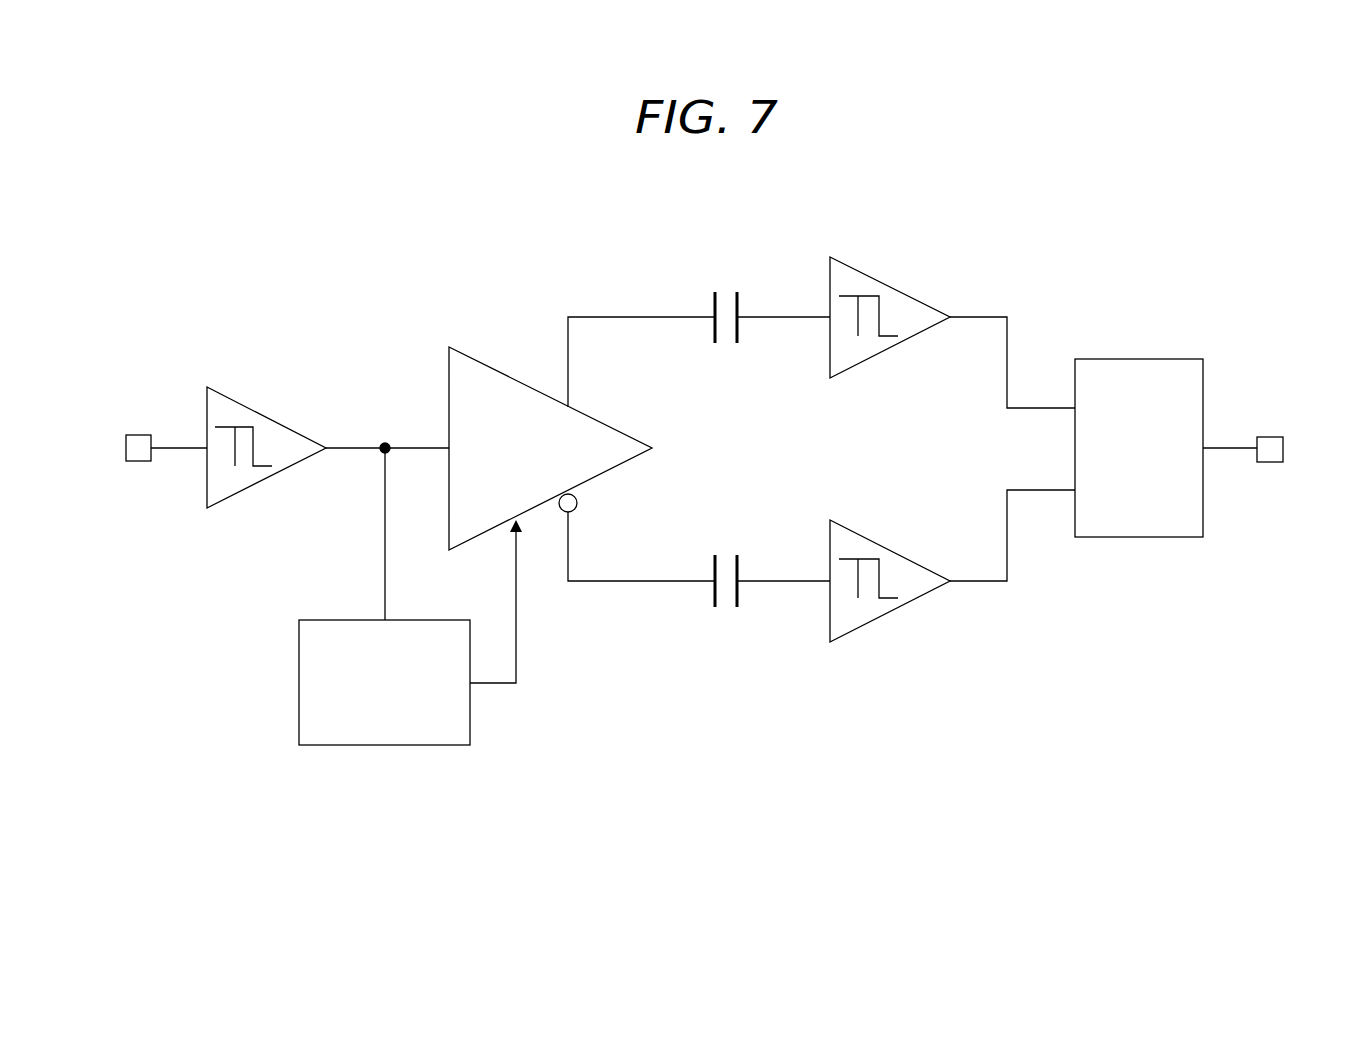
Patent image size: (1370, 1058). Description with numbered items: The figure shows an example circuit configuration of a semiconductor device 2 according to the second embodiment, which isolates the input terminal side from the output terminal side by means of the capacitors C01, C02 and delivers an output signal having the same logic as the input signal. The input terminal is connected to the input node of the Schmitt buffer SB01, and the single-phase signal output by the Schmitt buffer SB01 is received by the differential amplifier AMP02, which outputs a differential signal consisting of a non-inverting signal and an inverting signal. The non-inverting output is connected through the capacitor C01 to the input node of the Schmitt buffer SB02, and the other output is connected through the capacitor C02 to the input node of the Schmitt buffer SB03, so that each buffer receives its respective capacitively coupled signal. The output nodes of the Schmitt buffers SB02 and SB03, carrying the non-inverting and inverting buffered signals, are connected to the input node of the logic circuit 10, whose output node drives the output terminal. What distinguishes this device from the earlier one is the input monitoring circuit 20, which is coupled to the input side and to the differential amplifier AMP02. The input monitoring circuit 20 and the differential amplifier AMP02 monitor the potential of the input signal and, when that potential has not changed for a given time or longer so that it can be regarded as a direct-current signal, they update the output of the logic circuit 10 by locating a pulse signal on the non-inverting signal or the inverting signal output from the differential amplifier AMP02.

The semiconductor device 2 is at (1275, 168).
The logic circuit 10 is at (1145, 359).
The input monitoring circuit 20 is at (338, 620).
The Schmitt buffer SB01 is at (250, 410).
The Schmitt buffer SB02 is at (876, 280).
The Schmitt buffer SB03 is at (876, 543).
The differential amplifier AMP02 is at (484, 362).
The capacitor C01 is at (723, 300).
The capacitor C02 is at (723, 566).